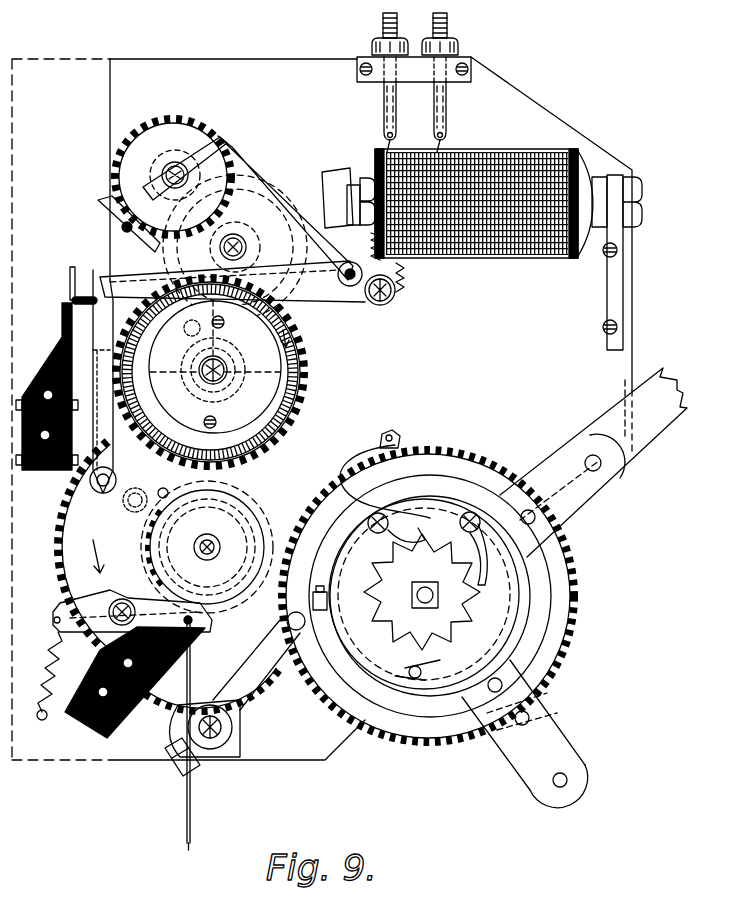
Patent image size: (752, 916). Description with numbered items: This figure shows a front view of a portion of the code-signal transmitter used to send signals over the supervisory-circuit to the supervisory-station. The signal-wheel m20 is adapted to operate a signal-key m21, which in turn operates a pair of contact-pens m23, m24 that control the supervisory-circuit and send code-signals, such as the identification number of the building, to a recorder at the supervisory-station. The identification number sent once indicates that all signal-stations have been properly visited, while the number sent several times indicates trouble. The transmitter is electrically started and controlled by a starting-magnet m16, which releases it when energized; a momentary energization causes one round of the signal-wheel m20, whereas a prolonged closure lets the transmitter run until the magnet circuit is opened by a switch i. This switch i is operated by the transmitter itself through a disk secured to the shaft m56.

The starting-magnet m16 is at (530, 257).
The signal-wheel m20 is at (310, 343).
The signal-key m21 is at (108, 277).
The contact-pen m23 is at (70, 272).
The contact-pen m24 is at (63, 306).
The shaft m56 is at (200, 543).
The switch i is at (240, 520).